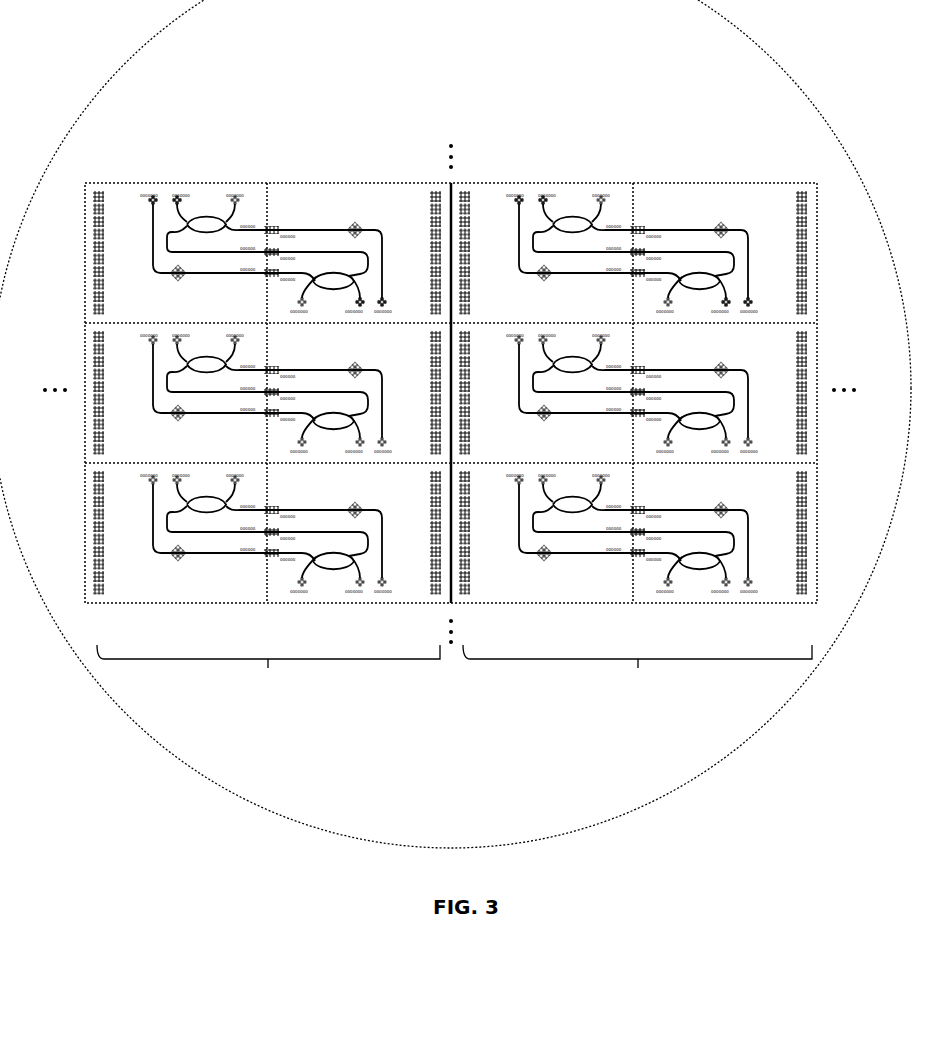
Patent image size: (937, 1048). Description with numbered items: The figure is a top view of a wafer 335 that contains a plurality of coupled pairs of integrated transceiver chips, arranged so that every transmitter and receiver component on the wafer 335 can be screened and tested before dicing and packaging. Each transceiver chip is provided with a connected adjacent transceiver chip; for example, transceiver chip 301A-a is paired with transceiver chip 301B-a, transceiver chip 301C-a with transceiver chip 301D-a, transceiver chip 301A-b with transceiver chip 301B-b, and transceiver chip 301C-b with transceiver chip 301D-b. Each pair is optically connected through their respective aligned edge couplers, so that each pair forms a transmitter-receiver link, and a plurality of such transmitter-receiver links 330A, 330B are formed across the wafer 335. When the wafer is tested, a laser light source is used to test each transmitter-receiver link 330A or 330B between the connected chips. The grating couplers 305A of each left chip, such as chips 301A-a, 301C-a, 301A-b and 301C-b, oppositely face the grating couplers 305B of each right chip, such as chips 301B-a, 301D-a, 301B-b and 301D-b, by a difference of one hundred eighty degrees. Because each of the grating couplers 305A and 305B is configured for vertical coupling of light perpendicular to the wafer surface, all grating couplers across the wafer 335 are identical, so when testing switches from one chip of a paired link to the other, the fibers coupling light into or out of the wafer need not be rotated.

The wafer 335 is at (183, 74).
The grating couplers 305A is at (177, 197).
The grating couplers 305B is at (384, 300).
The transceiver chip 301A-a is at (178, 310).
The transceiver chip 301B-a is at (423, 210).
The transceiver chip 301C-a is at (178, 450).
The transceiver chip 301D-a is at (423, 350).
The transceiver chip 301A-b is at (542, 312).
The transceiver chip 301B-b is at (792, 210).
The transceiver chip 301C-b is at (542, 450).
The transceiver chip 301D-b is at (792, 350).
The transmitter-receiver link 330A is at (268, 671).
The transmitter-receiver link 330B is at (637, 671).